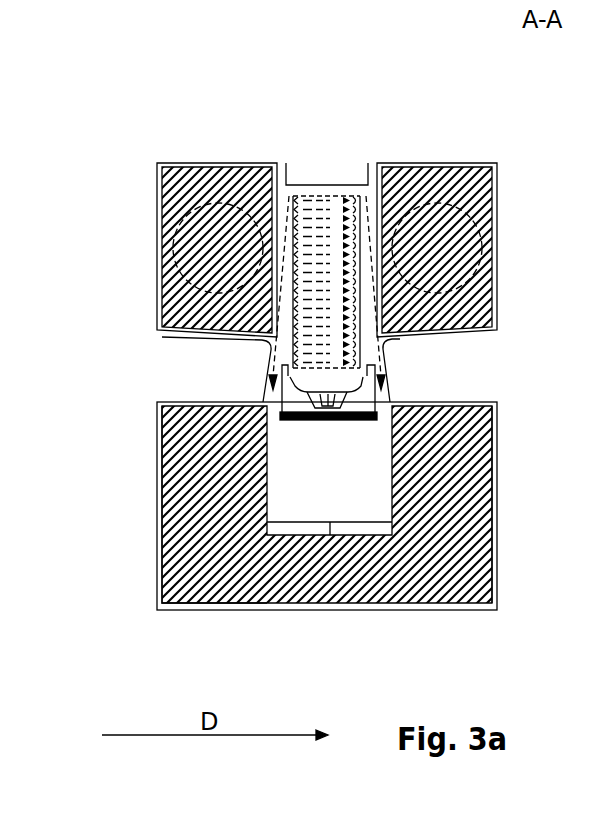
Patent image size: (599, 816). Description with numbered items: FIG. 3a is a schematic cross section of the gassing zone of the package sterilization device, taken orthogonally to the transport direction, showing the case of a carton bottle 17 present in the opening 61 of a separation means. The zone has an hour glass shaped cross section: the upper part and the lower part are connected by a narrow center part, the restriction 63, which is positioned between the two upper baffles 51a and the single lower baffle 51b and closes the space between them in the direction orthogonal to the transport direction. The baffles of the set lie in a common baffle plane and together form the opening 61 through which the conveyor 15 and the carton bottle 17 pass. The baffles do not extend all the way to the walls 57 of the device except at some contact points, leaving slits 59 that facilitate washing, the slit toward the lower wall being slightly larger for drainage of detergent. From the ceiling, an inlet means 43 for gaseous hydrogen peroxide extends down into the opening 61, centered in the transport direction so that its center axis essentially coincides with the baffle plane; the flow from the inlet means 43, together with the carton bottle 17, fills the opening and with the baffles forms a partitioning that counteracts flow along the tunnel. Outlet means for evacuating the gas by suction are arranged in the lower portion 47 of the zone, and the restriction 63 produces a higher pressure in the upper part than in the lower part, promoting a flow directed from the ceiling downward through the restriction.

The conveyor 15 is at (297, 423).
The carton bottle 17 is at (385, 351).
The inlet means 43 is at (325, 172).
The lower portion 47 is at (455, 480).
The upper baffle 51a is at (185, 183).
The lower baffle 51b is at (195, 553).
The wall 57 is at (495, 257).
The slit 59 is at (161, 238).
The opening 61 is at (540, 504).
The restriction 63 is at (384, 392).